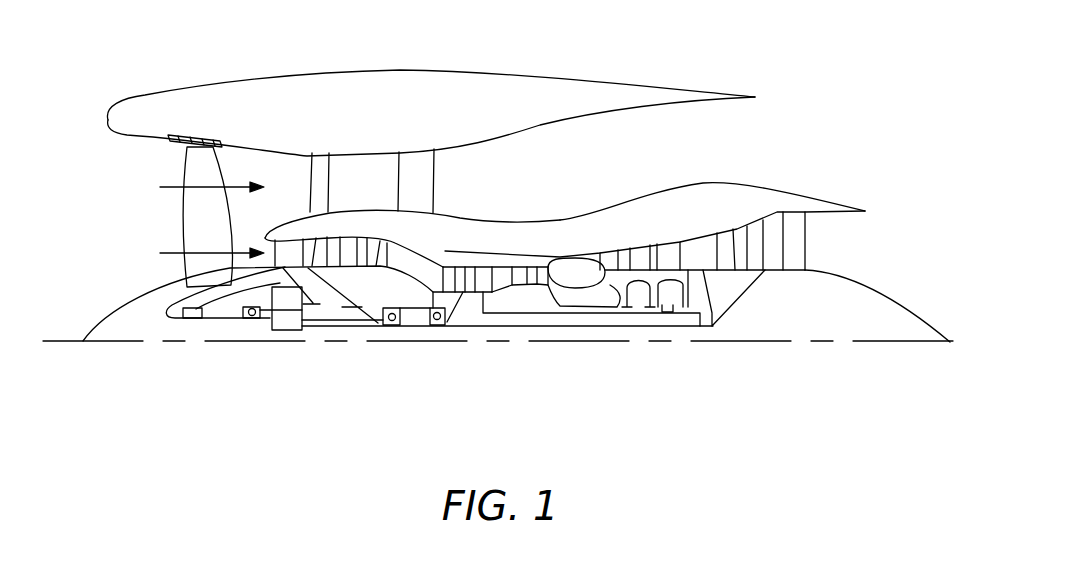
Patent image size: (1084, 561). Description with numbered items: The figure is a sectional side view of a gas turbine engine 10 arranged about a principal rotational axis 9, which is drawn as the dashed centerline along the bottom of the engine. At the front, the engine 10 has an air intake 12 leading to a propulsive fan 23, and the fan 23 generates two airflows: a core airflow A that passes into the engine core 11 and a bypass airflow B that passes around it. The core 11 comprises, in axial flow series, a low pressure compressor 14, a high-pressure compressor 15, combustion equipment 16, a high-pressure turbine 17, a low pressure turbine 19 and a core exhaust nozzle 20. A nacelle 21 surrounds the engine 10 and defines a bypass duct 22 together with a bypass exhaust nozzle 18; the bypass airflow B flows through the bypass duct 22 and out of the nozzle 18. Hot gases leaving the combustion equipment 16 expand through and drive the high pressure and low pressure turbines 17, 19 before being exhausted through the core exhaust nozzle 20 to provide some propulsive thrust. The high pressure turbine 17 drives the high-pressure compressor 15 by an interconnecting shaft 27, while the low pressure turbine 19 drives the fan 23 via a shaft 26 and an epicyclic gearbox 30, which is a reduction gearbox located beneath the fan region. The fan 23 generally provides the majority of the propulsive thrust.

The principal rotational axis 9 is at (658, 348).
The gas turbine engine 10 is at (502, 215).
The core 11 is at (547, 237).
The air intake 12 is at (137, 165).
The low pressure compressor 14 is at (357, 243).
The high-pressure compressor 15 is at (498, 277).
The combustion equipment 16 is at (571, 277).
The high-pressure turbine 17 is at (638, 262).
The bypass exhaust nozzle 18 is at (748, 139).
The low pressure turbine 19 is at (773, 228).
The core exhaust nozzle 20 is at (835, 244).
The nacelle 21 is at (413, 85).
The bypass duct 22 is at (678, 151).
The propulsive fan 23 is at (185, 212).
The shaft 26 is at (494, 330).
The interconnecting shaft 27 is at (533, 315).
The epicyclic gearbox 30 is at (285, 318).